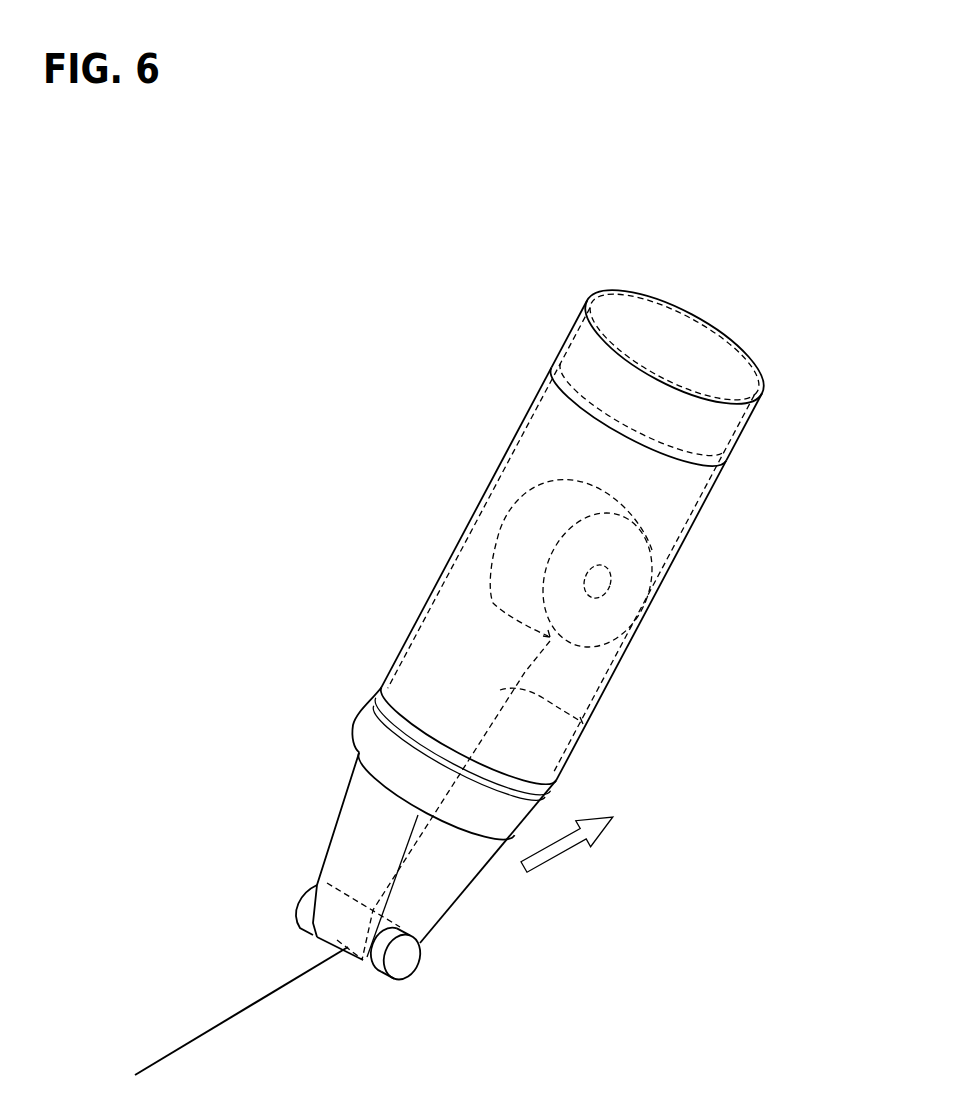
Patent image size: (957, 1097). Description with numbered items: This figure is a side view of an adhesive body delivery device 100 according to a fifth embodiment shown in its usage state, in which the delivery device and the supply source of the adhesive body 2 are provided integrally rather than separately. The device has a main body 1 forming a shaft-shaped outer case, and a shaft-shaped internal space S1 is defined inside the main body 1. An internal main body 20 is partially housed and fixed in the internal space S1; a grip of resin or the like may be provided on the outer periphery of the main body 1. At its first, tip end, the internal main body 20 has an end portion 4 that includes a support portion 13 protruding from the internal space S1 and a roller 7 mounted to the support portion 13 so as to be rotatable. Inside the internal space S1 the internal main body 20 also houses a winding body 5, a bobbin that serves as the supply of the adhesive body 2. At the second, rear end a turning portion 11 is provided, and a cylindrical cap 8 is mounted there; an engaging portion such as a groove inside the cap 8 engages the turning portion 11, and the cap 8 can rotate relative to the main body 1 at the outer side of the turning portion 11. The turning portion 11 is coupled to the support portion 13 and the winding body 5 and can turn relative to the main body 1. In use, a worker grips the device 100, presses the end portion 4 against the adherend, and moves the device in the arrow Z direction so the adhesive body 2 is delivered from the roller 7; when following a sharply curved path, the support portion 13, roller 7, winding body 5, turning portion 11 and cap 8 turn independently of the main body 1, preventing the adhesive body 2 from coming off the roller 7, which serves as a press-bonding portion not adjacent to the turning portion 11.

The adhesive body delivery device 100 is at (420, 377).
The cap 8 is at (568, 330).
The turning portion 11 is at (708, 318).
The main body 1 is at (685, 545).
The winding body 5 is at (511, 507).
The internal space S1 is at (633, 478).
The internal main body 20 is at (418, 612).
The adhesive body 2 is at (582, 722).
The support portion 13 is at (349, 804).
The end portion 4 is at (282, 820).
The roller 7 is at (405, 958).